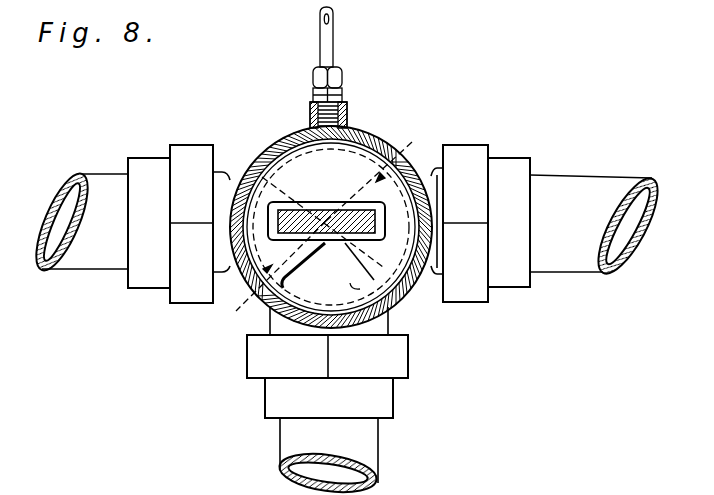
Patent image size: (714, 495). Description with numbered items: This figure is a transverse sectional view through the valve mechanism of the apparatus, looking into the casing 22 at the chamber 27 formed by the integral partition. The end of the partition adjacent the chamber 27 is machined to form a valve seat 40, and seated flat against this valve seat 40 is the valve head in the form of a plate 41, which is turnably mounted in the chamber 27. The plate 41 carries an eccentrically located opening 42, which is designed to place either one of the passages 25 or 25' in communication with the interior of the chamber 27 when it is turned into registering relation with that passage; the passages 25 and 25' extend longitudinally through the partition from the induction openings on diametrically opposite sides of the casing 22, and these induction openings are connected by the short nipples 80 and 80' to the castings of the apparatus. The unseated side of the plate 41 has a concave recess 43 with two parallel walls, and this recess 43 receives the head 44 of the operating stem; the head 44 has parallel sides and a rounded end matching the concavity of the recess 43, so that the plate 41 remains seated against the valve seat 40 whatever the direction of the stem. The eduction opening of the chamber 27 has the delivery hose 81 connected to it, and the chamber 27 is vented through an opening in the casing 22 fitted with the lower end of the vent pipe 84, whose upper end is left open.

The vent pipe 84 is at (323, 48).
The casing 22 is at (388, 146).
The chamber 27 is at (283, 136).
The valve plate 41 is at (342, 150).
The eccentrically located opening 42 is at (272, 298).
The passage 25 is at (348, 196).
The passage 25' is at (265, 275).
The concave recess 43 is at (313, 210).
The head of stem 44 is at (340, 236).
The valve seat 40 is at (393, 302).
The nipple 80 is at (556, 226).
The nipple 80' is at (119, 225).
The delivery hose 81 is at (364, 436).